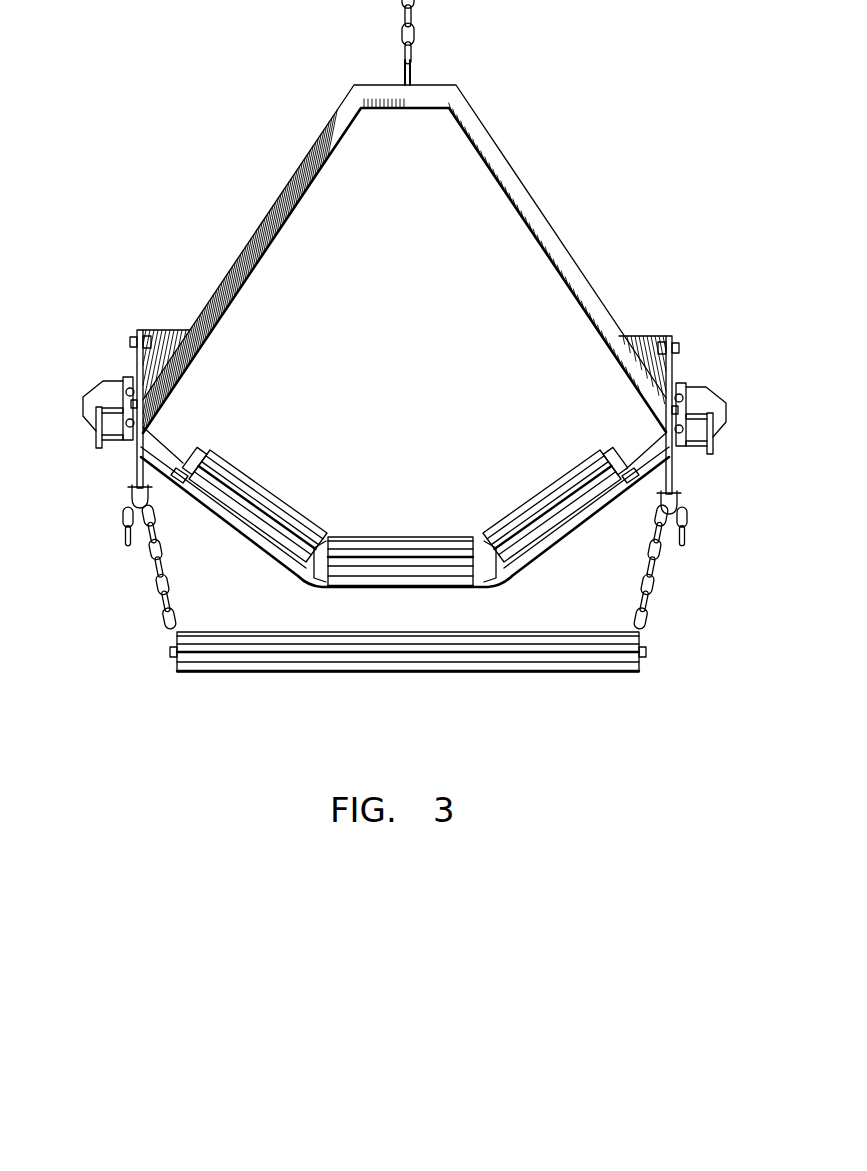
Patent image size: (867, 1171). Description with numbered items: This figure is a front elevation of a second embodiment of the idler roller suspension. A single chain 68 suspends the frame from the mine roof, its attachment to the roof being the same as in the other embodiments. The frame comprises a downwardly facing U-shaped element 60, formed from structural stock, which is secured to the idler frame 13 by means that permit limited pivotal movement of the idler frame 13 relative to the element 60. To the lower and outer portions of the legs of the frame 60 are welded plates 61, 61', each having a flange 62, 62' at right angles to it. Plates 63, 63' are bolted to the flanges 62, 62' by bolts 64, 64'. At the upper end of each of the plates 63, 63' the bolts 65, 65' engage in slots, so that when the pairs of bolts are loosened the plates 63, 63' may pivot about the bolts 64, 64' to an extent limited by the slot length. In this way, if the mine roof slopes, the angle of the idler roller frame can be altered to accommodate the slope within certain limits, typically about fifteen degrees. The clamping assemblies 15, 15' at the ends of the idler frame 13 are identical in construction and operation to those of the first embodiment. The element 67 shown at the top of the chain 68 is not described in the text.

The idler frame 13 is at (182, 462).
The clamping assembly 15 is at (78, 428).
The clamping assembly 15' is at (731, 409).
The U-shaped element 60 is at (297, 203).
The plate 61 is at (170, 333).
The plate 61' is at (656, 344).
The flange 62 is at (184, 419).
The flange 62' is at (600, 425).
The plate 63 is at (94, 386).
The plate 63' is at (706, 384).
The bolt 64 is at (180, 425).
The bolt 64' is at (628, 431).
The bolt 65 is at (114, 308).
The bolt 65' is at (706, 307).
The eye 67 is at (414, 80).
The chain 68 is at (416, 38).